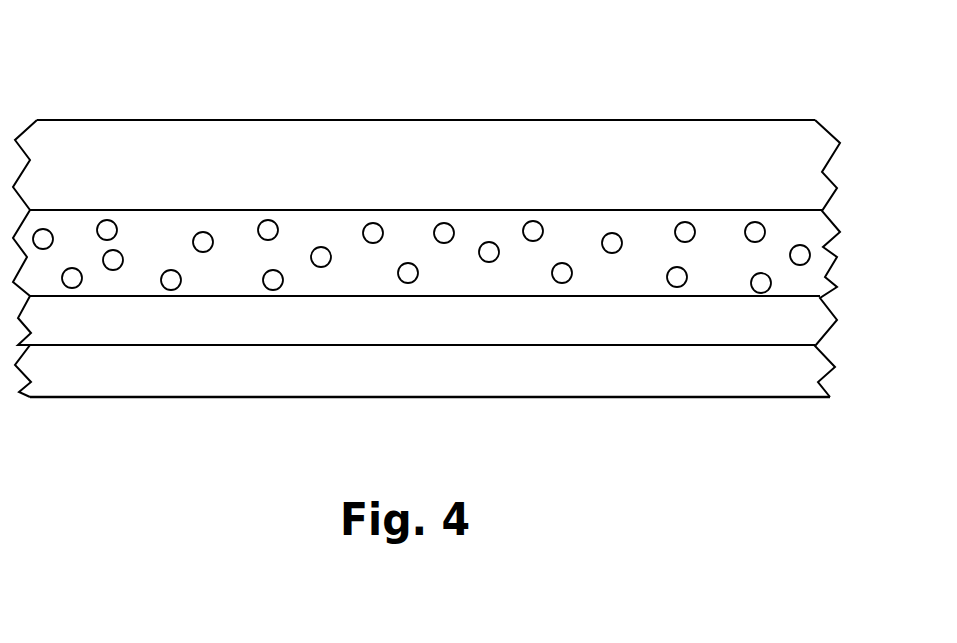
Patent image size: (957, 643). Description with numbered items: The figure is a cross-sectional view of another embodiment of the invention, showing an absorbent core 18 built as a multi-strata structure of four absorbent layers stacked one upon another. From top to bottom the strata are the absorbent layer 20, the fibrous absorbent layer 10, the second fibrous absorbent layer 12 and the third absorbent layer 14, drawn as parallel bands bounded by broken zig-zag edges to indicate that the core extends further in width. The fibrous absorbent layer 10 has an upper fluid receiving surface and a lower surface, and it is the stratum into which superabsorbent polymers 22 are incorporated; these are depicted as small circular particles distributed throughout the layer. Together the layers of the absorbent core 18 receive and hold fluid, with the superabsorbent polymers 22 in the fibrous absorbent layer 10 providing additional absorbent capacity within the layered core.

The absorbent core 18 is at (120, 108).
The absorbent layer 20 is at (605, 172).
The fibrous absorbent layer 10 is at (663, 250).
The superabsorbent polymers 22 is at (533, 221).
The second fibrous absorbent layer 12 is at (674, 328).
The third absorbent layer 14 is at (753, 377).